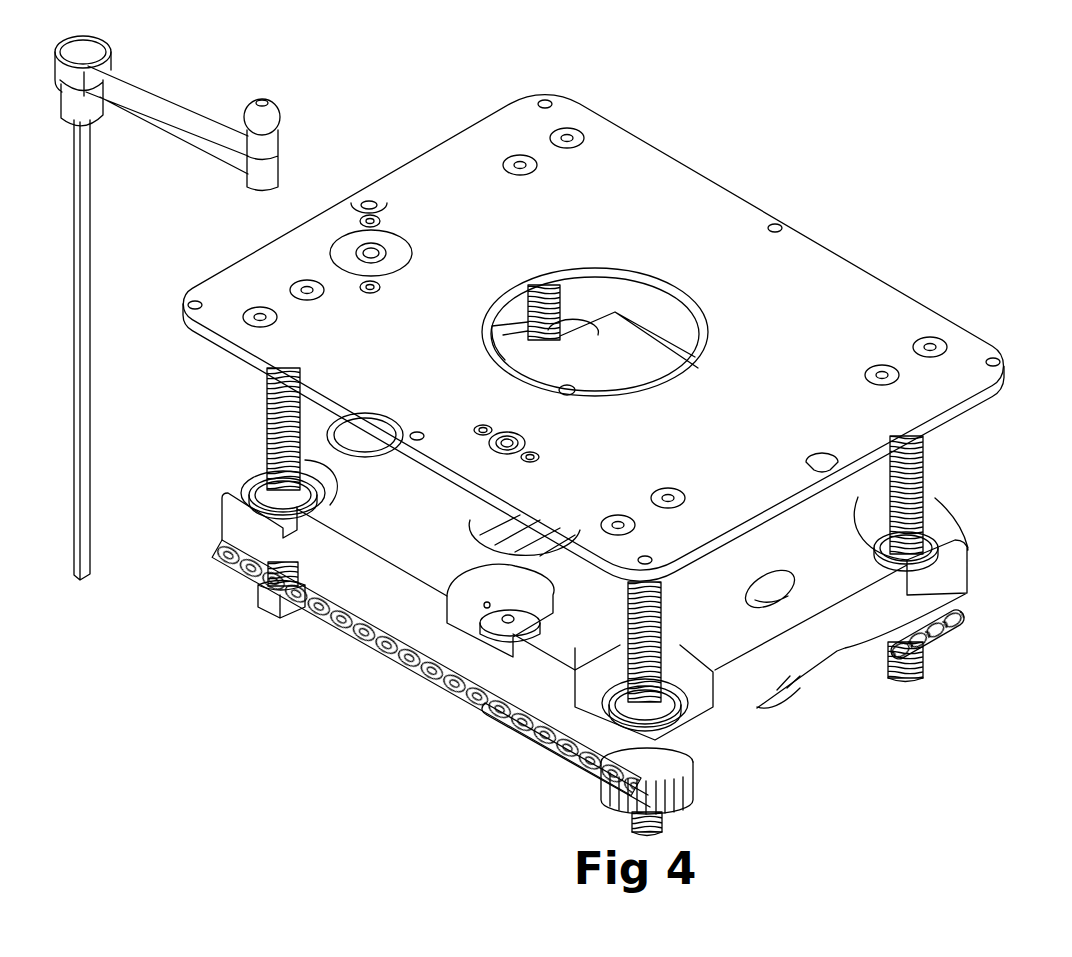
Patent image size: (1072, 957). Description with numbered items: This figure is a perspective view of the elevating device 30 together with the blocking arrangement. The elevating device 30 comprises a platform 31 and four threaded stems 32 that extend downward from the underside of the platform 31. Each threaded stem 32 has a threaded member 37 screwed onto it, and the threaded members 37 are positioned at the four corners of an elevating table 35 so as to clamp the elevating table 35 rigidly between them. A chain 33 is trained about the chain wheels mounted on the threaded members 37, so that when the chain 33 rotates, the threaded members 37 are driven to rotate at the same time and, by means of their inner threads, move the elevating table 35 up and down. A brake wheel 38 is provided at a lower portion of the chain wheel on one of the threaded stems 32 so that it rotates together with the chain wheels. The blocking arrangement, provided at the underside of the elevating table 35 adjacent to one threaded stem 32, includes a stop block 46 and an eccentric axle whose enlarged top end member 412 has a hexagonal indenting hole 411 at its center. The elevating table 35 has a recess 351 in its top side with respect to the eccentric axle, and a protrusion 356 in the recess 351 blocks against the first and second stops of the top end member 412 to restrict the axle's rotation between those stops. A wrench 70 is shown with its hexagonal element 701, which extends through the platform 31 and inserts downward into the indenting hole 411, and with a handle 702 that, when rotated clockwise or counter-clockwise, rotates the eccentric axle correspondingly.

The elevating device 30 is at (592, 465).
The platform 31 is at (828, 252).
The threaded stem 32 is at (553, 297).
The chain 33 is at (403, 633).
The elevating table 35 is at (368, 590).
The recess 351 is at (487, 608).
The protrusion 356 is at (467, 624).
The threaded member 37 is at (570, 332).
The brake wheel 38 is at (675, 795).
The hexagonal indenting hole 411 is at (507, 622).
The top end member 412 is at (533, 613).
The stop block 46 is at (521, 733).
The wrench 70 is at (167, 308).
The hexagonal element 701 is at (85, 268).
The handle 702 is at (172, 103).